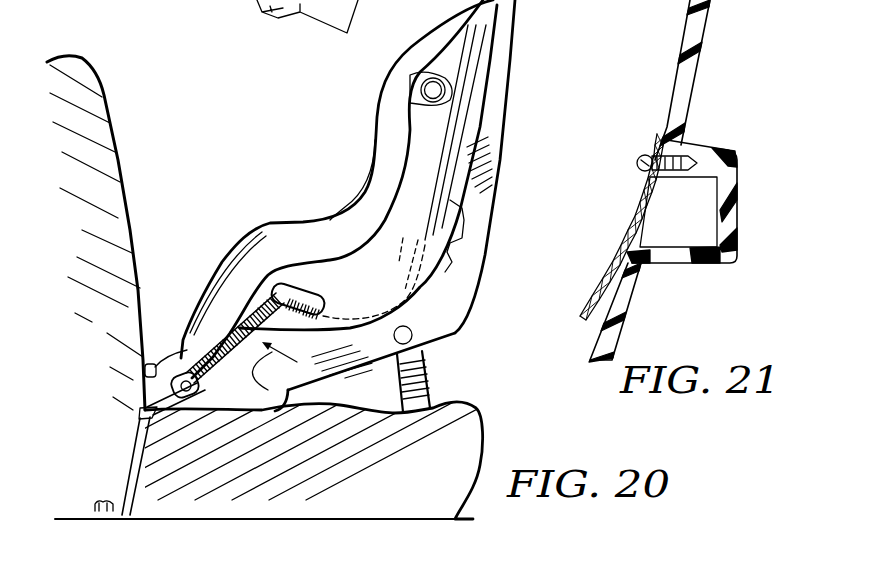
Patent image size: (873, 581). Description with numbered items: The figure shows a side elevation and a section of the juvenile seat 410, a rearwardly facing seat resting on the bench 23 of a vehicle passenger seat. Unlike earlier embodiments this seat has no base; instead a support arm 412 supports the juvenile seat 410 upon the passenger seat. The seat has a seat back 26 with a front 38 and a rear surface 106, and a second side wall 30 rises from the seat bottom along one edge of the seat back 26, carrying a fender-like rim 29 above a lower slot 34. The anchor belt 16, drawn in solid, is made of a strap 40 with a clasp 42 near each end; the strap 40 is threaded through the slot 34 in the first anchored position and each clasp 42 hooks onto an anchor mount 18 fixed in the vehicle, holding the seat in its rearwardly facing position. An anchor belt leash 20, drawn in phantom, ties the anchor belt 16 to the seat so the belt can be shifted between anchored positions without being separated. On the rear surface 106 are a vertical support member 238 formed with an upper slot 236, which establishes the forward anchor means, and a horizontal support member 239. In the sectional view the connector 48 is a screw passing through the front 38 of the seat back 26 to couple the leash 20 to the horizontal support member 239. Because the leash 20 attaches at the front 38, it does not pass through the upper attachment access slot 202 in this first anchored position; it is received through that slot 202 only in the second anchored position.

In FIG. 20, the anchor belt 16 is at (337, 388).
In FIG. 20, the anchor mount 18 is at (120, 466).
In FIG. 20, the anchor belt leash 20 is at (364, 306).
In FIG. 21, the anchor belt leash 20 is at (630, 230).
In FIG. 20, the bench 23 is at (467, 423).
In FIG. 21, the seat back 26 is at (670, 45).
In FIG. 20, the fender-like rim 29 is at (255, 232).
In FIG. 20, the second side wall 30 is at (433, 137).
In FIG. 20, the slot 34 is at (293, 288).
In FIG. 21, the front 38 is at (690, 10).
In FIG. 20, the strap 40 is at (247, 323).
In FIG. 20, the clasp 42 is at (162, 374).
In FIG. 20, the connector 48 is at (403, 254).
In FIG. 21, the connector 48 is at (633, 156).
In FIG. 21, the rear surface 106 is at (703, 40).
In FIG. 21, the upper attachment access slot 202 is at (680, 63).
In FIG. 20, the upper slot 236 is at (467, 268).
In FIG. 20, the vertical support member 238 is at (490, 138).
In FIG. 21, the horizontal support member 239 is at (715, 136).
In FIG. 20, the juvenile seat 410 is at (525, 38).
In FIG. 20, the support arm 412 is at (427, 400).